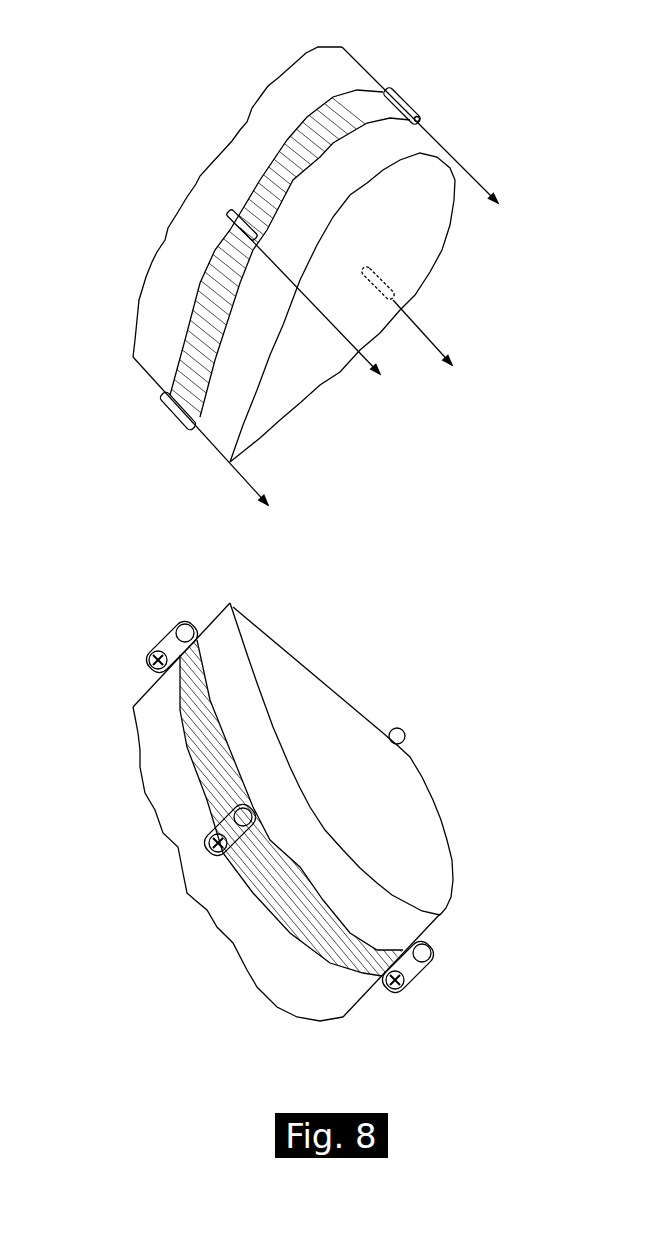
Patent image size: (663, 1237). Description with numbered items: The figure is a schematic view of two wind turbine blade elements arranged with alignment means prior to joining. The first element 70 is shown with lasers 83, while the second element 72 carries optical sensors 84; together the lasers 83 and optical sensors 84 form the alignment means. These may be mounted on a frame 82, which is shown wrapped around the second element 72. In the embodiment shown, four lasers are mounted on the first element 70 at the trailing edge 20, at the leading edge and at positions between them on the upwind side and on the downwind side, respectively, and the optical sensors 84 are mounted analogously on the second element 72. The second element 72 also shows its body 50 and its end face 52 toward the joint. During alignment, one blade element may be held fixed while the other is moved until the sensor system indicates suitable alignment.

The trailing edge 20 is at (150, 372).
The body 50 is at (203, 753).
The end face 52 is at (475, 837).
The first element 70 is at (113, 232).
The second element 72 is at (137, 908).
The frame 82 is at (272, 888).
The laser 83 is at (227, 213).
The optical sensor 84 is at (207, 835).